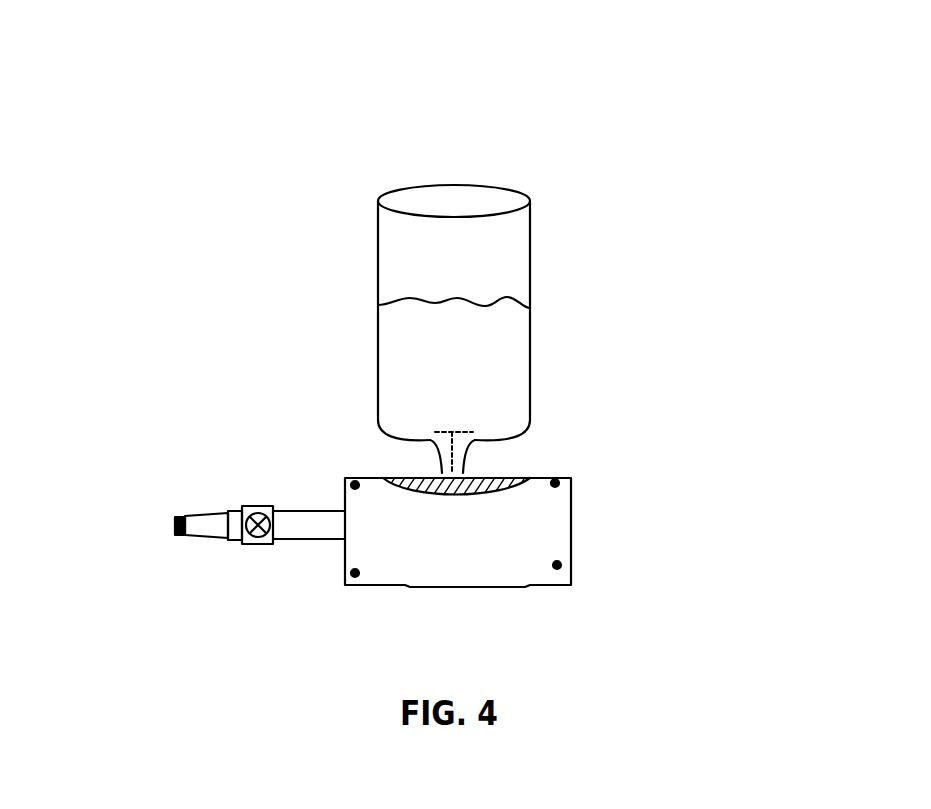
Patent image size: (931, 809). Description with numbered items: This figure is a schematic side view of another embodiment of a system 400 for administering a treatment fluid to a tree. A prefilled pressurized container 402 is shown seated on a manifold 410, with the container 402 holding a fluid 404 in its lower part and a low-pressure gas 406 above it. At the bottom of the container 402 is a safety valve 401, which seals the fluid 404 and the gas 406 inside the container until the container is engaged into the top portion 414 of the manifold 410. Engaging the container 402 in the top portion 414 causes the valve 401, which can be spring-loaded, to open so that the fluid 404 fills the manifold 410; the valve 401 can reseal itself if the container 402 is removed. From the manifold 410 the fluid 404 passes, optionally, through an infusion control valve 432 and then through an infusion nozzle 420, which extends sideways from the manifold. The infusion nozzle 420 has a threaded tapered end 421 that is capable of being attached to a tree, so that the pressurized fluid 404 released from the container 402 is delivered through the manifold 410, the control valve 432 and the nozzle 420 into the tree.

The system 400 is at (370, 133).
The safety valve 401 is at (447, 425).
The prefilled pressurized container 402 is at (529, 260).
The fluid 404 is at (490, 365).
The low-pressure gas 406 is at (408, 265).
The manifold 410 is at (497, 526).
The top portion 414 is at (392, 455).
The infusion nozzle 420 is at (208, 527).
The threaded tapered end 421 is at (175, 525).
The infusion control valve 432 is at (253, 508).